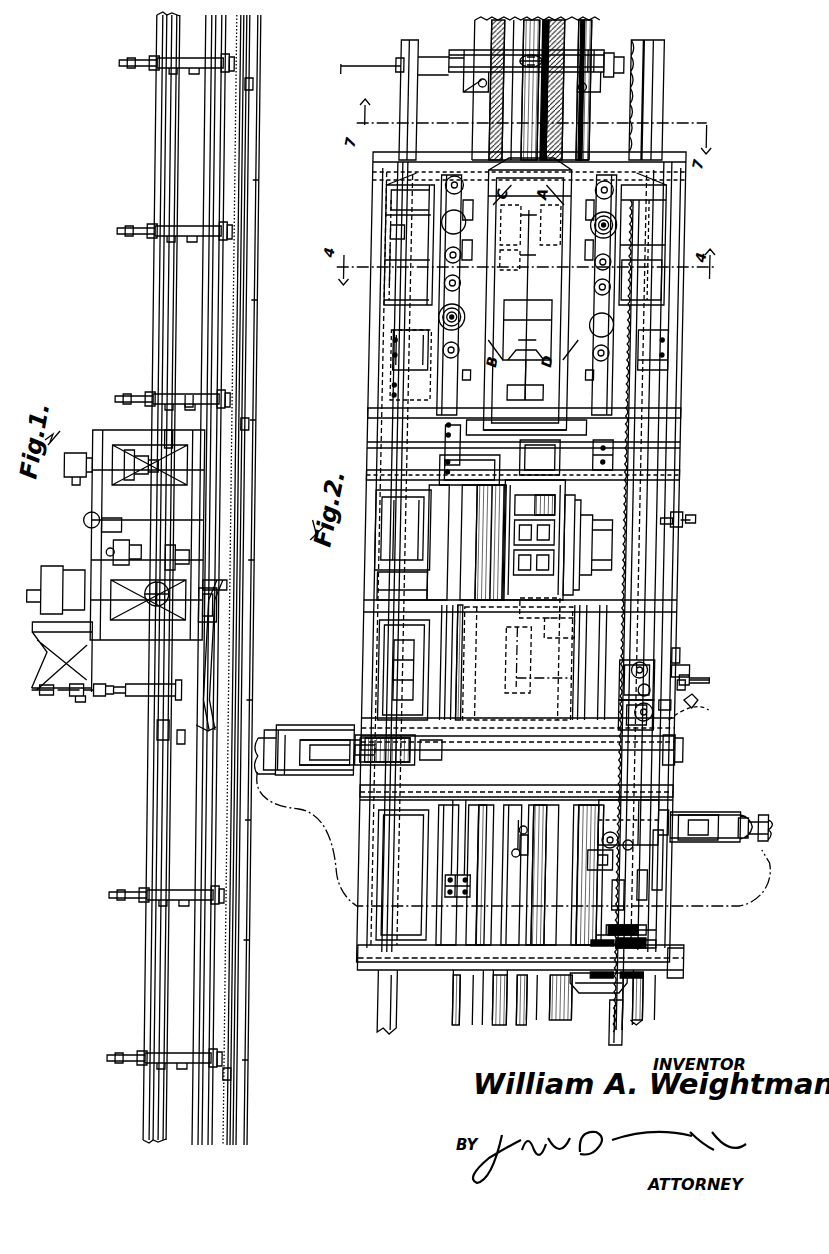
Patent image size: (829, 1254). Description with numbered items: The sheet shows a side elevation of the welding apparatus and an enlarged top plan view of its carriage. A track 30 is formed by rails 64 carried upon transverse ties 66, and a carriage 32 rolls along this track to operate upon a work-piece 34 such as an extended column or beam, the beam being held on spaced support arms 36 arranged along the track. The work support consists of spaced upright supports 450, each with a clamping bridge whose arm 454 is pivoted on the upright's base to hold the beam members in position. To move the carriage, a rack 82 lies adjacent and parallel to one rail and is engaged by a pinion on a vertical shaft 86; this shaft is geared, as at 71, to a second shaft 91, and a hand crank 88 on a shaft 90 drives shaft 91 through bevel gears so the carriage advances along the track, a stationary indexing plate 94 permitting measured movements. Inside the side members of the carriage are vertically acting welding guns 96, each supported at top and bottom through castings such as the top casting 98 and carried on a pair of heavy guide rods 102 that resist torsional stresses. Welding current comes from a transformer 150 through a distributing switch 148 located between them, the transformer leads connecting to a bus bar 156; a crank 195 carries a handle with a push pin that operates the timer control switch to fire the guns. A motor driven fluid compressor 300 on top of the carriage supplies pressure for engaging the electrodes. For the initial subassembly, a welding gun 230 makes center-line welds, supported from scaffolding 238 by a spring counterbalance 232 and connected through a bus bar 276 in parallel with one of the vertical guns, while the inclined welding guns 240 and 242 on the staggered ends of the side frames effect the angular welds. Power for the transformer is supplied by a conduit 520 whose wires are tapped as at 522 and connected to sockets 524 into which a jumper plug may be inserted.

In FIG. 1, the track 30 is at (258, 28).
In FIG. 2, the track 30 is at (430, 38).
In FIG. 1, the carriage 32 is at (102, 434).
In FIG. 2, the carriage 32 is at (370, 332).
In FIG. 1, the work-piece 34 is at (150, 194).
In FIG. 2, the work-piece 34 is at (473, 1034).
In FIG. 1, the support arms 36 is at (195, 218).
In FIG. 2, the support arms 36 is at (476, 46).
In FIG. 2, the rails 64 is at (370, 1012).
In FIG. 1, the transverse ties 66 is at (250, 975).
In FIG. 1, the gearing 71 is at (222, 612).
In FIG. 2, the gearing 71 is at (680, 745).
In FIG. 2, the rack 82 is at (636, 1010).
In FIG. 2, the vertical shaft 86 is at (682, 710).
In FIG. 1, the hand crank 88 is at (174, 549).
In FIG. 2, the hand crank 88 is at (696, 685).
In FIG. 2, the shaft 90 is at (692, 640).
In FIG. 2, the second shaft 91 is at (678, 635).
In FIG. 2, the indexing plate 94 is at (690, 655).
In FIG. 1, the welding guns 96 is at (150, 452).
In FIG. 2, the top casting 98 is at (450, 228).
In FIG. 2, the guide rods 102 is at (447, 277).
In FIG. 1, the secondary distributing switch 148 is at (98, 528).
In FIG. 2, the secondary distributing switch 148 is at (552, 642).
In FIG. 1, the transformer 150 is at (46, 587).
In FIG. 2, the transformer 150 is at (502, 690).
In FIG. 1, the bus bar 156 is at (116, 552).
In FIG. 2, the crank 195 is at (692, 515).
In FIG. 1, the welding gun 230 is at (142, 702).
In FIG. 2, the welding gun 230 is at (598, 1010).
In FIG. 1, the spring counterbalance 232 is at (78, 702).
In FIG. 1, the scaffolding 238 is at (82, 676).
In FIG. 2, the inclined welding gun 240 is at (298, 732).
In FIG. 1, the inclined welding gun 242 is at (206, 666).
In FIG. 2, the inclined welding gun 242 is at (738, 820).
In FIG. 2, the bus bar 276 is at (445, 436).
In FIG. 1, the motor driven fluid compressor 300 is at (78, 464).
In FIG. 1, the upright support 450 is at (160, 586).
In FIG. 1, the clamping arm 454 is at (185, 540).
In FIG. 1, the conduit 520 is at (205, 30).
In FIG. 1, the taps 522 is at (226, 108).
In FIG. 1, the sockets 524 is at (258, 92).